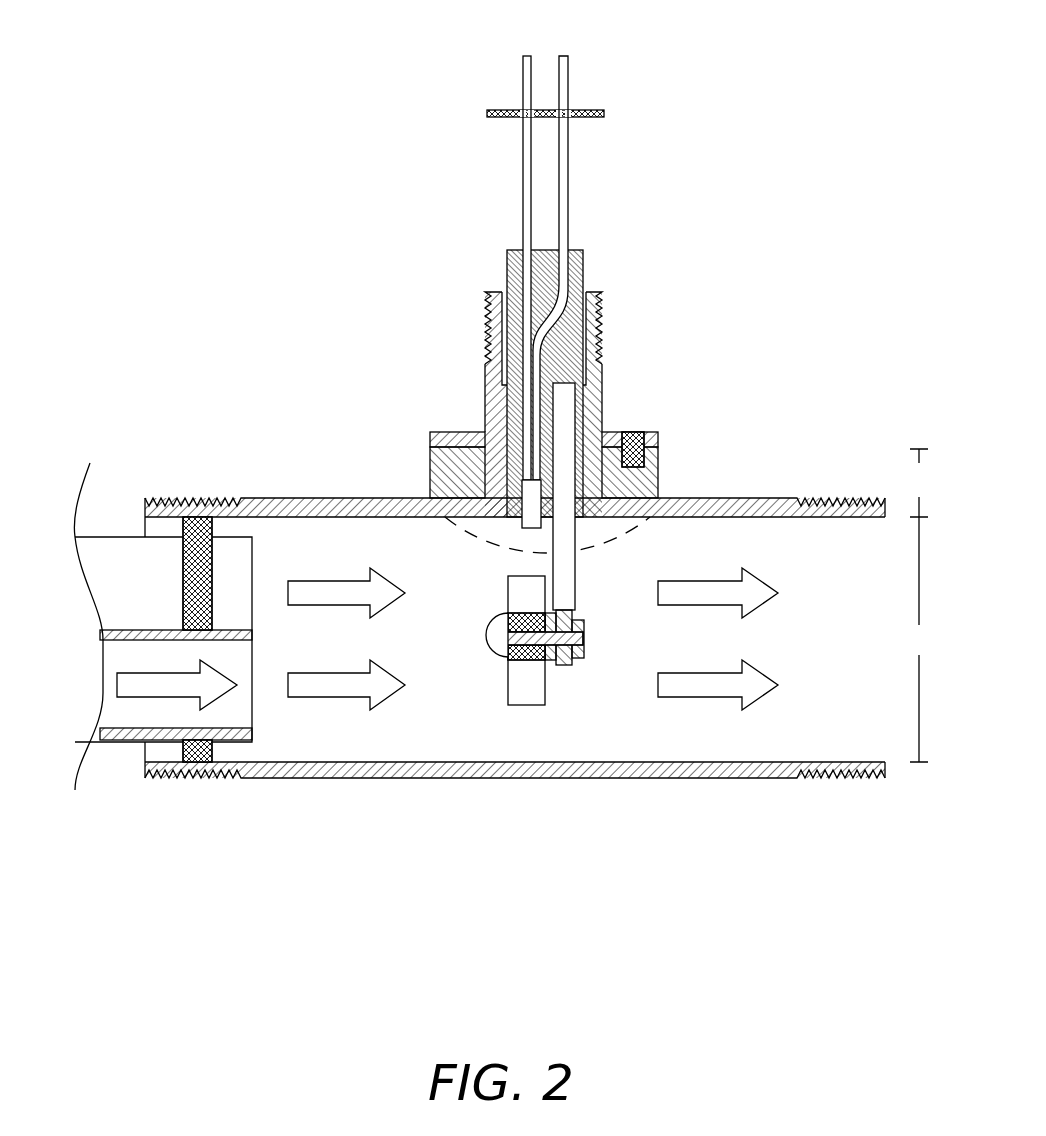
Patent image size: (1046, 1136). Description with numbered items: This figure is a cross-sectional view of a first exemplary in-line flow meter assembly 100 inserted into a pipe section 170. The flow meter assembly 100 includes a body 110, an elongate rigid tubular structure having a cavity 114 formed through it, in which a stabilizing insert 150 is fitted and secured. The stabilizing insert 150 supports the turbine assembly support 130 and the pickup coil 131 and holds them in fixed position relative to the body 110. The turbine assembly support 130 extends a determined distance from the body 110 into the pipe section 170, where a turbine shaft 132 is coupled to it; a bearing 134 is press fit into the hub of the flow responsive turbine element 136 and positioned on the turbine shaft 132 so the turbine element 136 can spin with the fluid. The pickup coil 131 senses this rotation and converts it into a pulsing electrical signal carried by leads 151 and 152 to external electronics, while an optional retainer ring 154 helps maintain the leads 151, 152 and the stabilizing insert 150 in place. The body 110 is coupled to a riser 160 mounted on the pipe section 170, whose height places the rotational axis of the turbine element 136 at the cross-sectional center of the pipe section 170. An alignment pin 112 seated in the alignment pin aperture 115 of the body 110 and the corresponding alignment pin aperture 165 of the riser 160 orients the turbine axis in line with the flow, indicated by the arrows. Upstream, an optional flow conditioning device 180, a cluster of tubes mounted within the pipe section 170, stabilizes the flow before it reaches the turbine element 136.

The in-line flow meter assembly 100 is at (357, 36).
The body 110 is at (602, 387).
The alignment pin 112 is at (633, 432).
The cavity 114 is at (602, 322).
The alignment pin aperture 115 is at (657, 433).
The turbine assembly support 130 is at (577, 527).
The pickup coil 131 is at (447, 498).
The turbine shaft 132 is at (507, 660).
The bearing 134 is at (545, 665).
The flow responsive turbine element 136 is at (507, 595).
The stabilizing insert 150 is at (507, 262).
The lead 151 is at (522, 165).
The lead 152 is at (568, 200).
The retainer ring 154 is at (604, 110).
The riser 160 is at (430, 458).
The alignment pin aperture 165 is at (657, 455).
The pipe section 170 is at (730, 777).
The flow conditioning device 180 is at (110, 537).